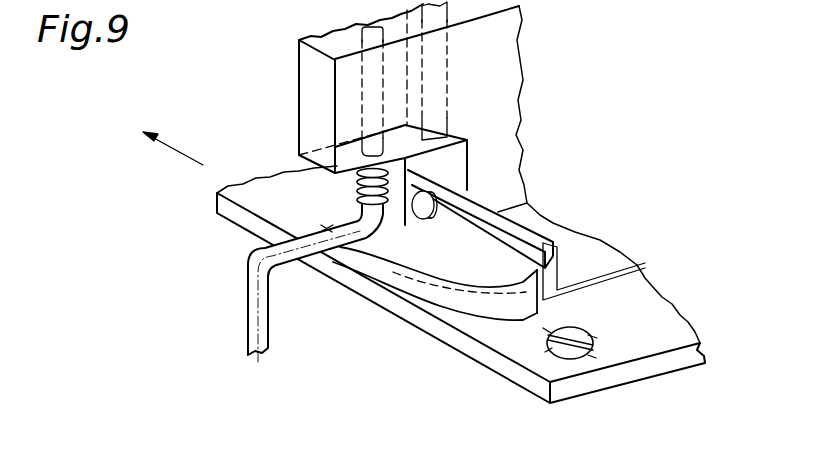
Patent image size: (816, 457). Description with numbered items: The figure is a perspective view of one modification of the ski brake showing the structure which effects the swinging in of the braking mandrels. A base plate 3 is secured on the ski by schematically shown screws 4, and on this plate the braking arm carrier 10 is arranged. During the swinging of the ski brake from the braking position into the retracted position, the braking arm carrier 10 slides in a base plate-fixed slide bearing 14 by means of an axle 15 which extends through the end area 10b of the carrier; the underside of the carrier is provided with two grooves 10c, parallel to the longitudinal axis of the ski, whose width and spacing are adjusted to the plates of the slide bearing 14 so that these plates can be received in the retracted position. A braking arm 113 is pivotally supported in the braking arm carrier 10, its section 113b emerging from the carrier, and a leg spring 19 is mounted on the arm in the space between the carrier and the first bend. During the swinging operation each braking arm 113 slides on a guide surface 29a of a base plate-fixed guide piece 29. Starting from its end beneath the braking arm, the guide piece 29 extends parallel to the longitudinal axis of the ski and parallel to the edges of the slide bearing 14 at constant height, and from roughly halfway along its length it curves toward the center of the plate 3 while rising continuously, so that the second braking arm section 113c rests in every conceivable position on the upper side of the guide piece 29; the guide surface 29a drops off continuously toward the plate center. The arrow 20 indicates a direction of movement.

The base plate 3 is at (653, 315).
The screw 4 is at (568, 328).
The braking arm carrier 10 is at (505, 123).
The end area of braking arm carrier 10b is at (505, 172).
The grooves 10c is at (425, 66).
The slide bearing 14 is at (475, 238).
The axle 15 is at (423, 207).
The leg spring 19 is at (361, 205).
The direction of movement 20 is at (177, 148).
The guide piece 29 is at (374, 262).
The guide surface 29a is at (395, 270).
The braking arm 113 is at (247, 313).
The tube end in block 113b is at (362, 112).
The second braking arm section 113c is at (297, 247).